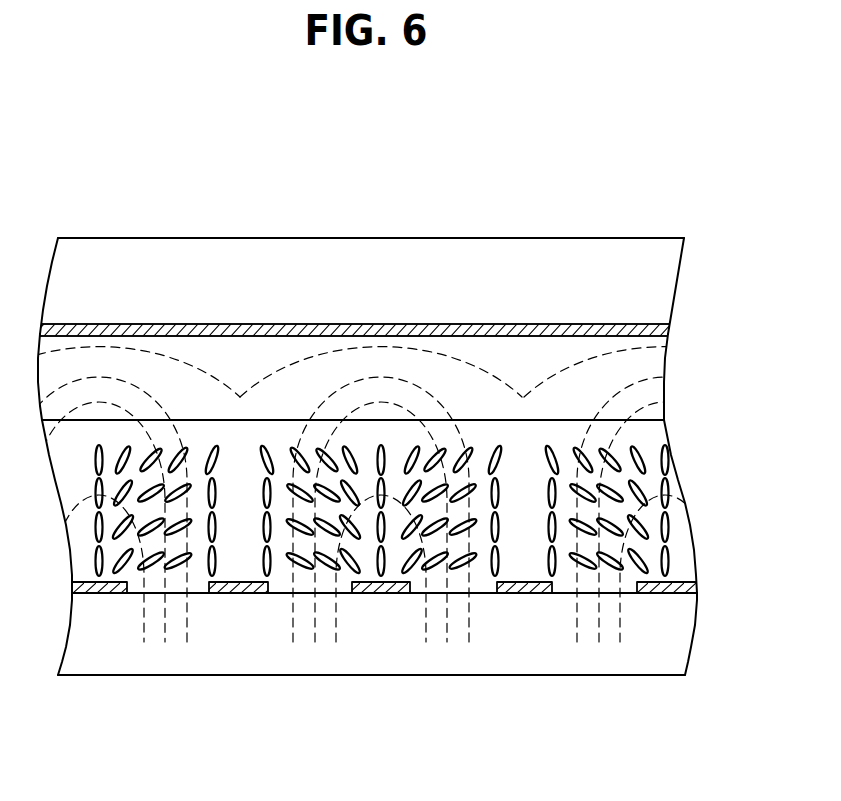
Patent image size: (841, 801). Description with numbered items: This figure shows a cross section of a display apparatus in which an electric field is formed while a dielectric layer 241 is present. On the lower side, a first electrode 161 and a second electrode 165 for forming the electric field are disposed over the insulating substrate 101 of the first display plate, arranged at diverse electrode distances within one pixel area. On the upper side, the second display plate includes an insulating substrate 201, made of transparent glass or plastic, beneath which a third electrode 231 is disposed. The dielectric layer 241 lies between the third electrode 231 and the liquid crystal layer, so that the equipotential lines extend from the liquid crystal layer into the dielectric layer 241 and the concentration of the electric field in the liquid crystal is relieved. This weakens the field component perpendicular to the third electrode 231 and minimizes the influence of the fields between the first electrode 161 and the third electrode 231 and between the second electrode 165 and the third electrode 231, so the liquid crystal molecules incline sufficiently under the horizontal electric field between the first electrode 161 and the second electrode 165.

The insulating substrate 201 is at (417, 254).
The third electrode 231 is at (325, 332).
The dielectric layer 241 is at (228, 353).
The first electrode 161 is at (237, 590).
The second electrode 165 is at (97, 590).
The insulating substrate 101 is at (596, 663).